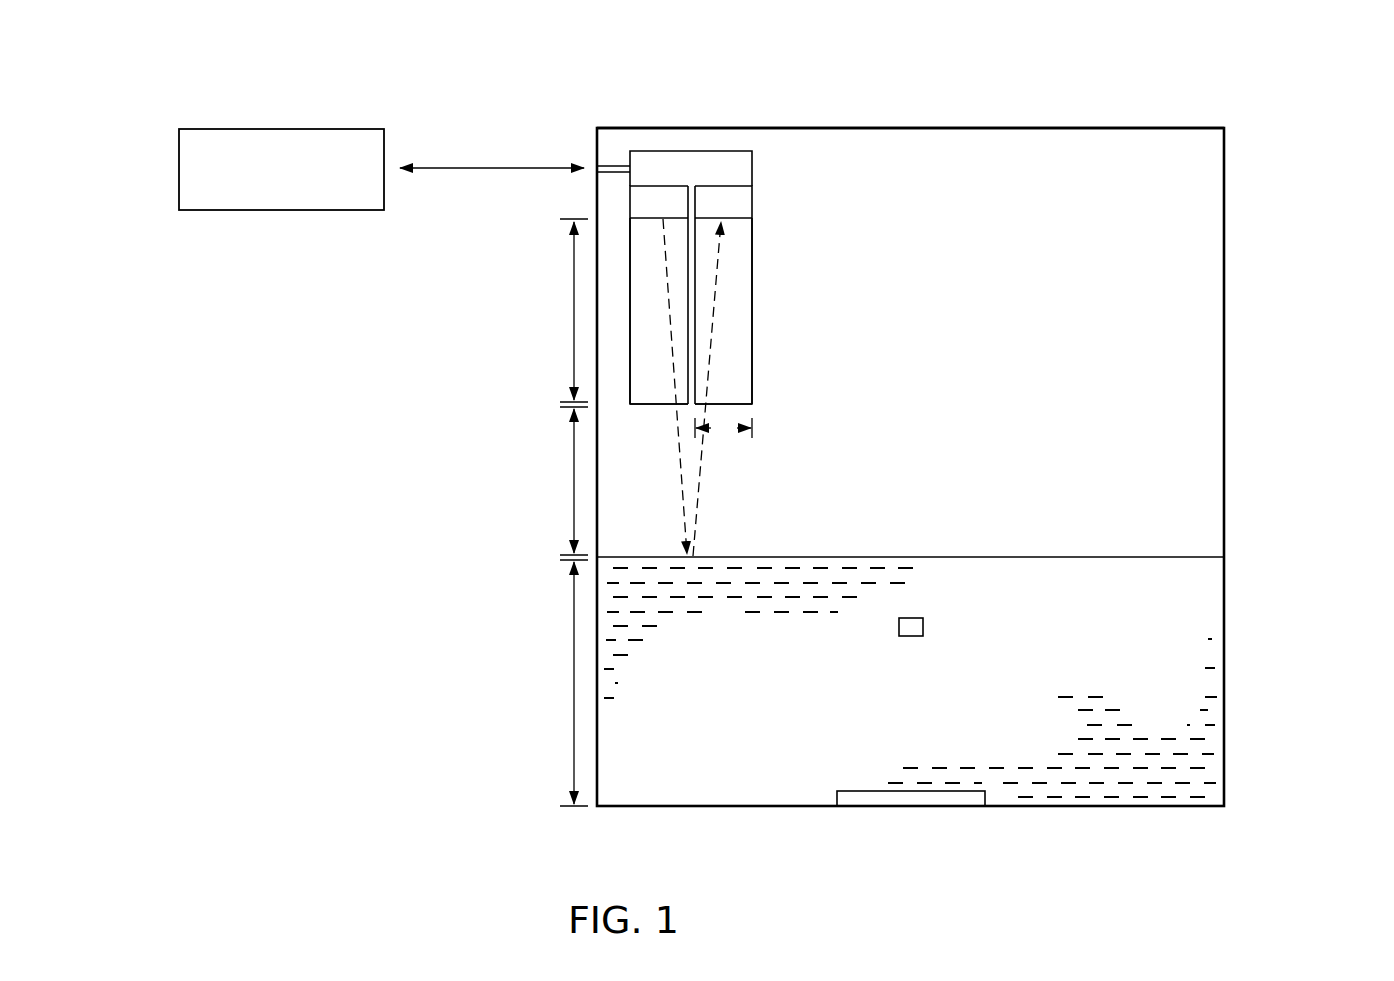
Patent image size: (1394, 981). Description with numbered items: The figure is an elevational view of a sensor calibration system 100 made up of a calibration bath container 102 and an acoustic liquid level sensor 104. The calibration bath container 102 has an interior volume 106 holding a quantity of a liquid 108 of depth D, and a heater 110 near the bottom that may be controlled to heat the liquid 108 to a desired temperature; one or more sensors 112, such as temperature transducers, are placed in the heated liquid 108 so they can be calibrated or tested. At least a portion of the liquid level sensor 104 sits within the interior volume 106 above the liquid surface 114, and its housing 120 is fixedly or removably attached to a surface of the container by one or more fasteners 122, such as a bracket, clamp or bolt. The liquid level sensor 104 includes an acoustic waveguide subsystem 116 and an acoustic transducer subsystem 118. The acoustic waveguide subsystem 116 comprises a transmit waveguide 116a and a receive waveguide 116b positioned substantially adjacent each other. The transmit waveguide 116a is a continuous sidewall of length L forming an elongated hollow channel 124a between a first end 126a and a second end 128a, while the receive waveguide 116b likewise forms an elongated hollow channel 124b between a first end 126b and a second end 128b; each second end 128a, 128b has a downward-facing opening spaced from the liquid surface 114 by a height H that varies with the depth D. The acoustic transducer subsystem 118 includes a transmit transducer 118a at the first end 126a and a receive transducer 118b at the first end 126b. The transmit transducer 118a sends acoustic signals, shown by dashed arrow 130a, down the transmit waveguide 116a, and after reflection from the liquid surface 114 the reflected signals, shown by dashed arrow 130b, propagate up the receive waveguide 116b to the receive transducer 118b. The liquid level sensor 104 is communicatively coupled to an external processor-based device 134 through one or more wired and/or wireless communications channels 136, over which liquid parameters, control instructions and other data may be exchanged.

The sensor calibration system 100 is at (1118, 56).
The calibration bath container 102 is at (1225, 184).
The acoustic liquid level sensor 104 is at (822, 160).
The interior volume 106 is at (1138, 335).
The liquid 108 is at (1178, 628).
The heater 110 is at (932, 800).
The sensor 112 is at (923, 625).
The liquid surface 114 is at (1167, 557).
The acoustic waveguide subsystem 116 is at (780, 340).
The transmit waveguide 116a is at (630, 360).
The receive waveguide 116b is at (753, 305).
The acoustic transducer subsystem 118 is at (762, 180).
The transmit transducer 118a is at (652, 205).
The receive transducer 118b is at (735, 207).
The housing 120 is at (667, 160).
The fastener 122 is at (613, 166).
The elongated hollow channel 124a is at (645, 280).
The elongated hollow channel 124b is at (735, 270).
The first end 126a is at (630, 221).
The first end 126b is at (753, 218).
The second end 128a is at (627, 404).
The second end 128b is at (757, 404).
The acoustic signals 130a is at (682, 470).
The reflected acoustic signals 130b is at (700, 470).
The external processor-based device 134 is at (258, 129).
The communications channel 136 is at (510, 168).